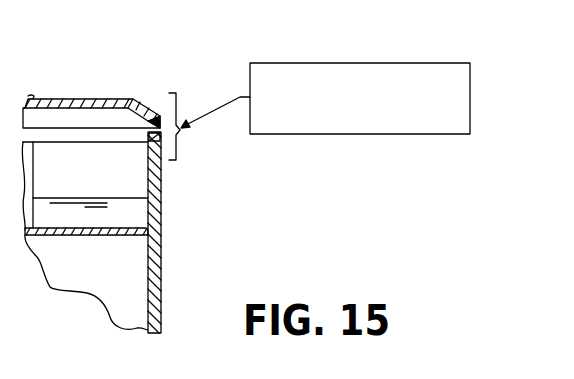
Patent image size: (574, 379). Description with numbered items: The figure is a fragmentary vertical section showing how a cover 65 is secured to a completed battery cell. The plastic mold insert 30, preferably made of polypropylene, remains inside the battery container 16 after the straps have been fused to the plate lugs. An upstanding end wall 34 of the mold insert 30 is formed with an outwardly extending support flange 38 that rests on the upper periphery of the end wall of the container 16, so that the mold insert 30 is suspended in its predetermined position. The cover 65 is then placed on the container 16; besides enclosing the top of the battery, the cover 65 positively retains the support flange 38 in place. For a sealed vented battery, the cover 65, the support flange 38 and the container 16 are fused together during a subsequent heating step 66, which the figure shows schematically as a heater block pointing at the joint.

The cover 65 is at (105, 98).
The container 16 is at (163, 215).
The support flange 38 is at (163, 137).
The end wall 34 is at (148, 178).
The mold insert 30 is at (63, 238).
The heating step 66 is at (385, 136).